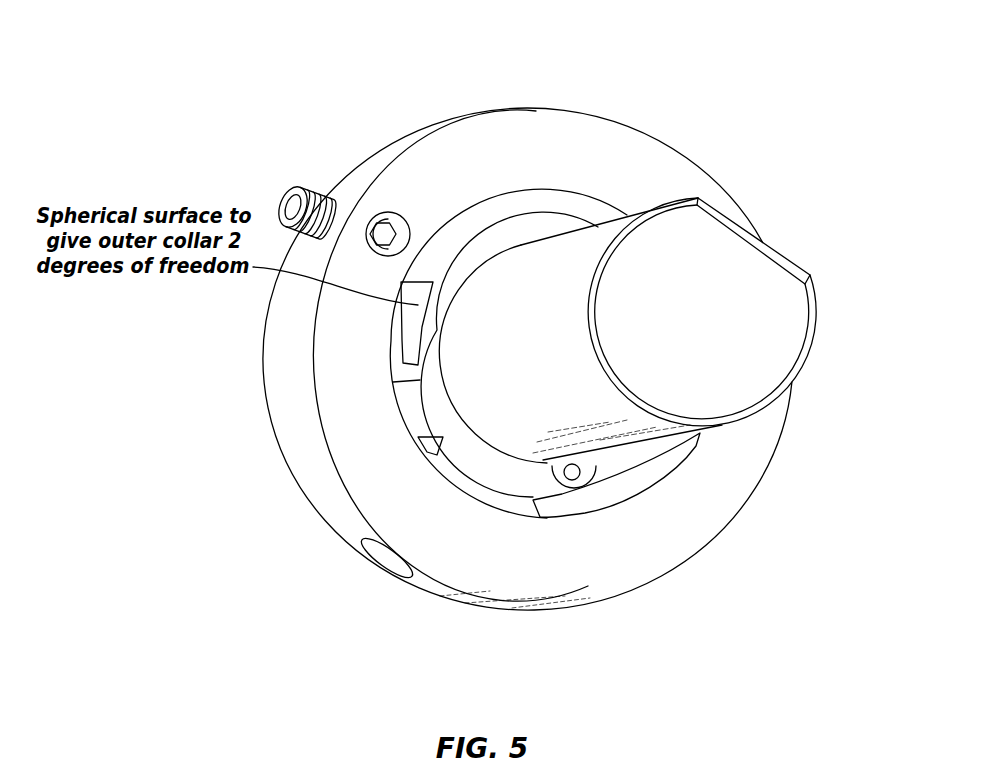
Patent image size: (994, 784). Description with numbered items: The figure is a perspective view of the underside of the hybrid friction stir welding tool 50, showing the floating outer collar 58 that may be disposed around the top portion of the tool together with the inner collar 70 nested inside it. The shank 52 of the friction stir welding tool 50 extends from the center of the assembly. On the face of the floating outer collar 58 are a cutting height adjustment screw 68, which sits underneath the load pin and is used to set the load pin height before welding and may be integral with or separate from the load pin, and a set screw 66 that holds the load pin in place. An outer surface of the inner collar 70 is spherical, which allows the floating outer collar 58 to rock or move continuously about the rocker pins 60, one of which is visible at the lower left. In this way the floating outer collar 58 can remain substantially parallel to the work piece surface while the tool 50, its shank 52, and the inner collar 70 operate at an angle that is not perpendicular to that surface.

The friction stir welding tool 50 is at (708, 135).
The shank 52 is at (786, 320).
The floating outer collar 58 is at (285, 373).
The rocker pins 60 is at (383, 555).
The set screw 66 is at (288, 196).
The cutting height adjustment screw 68 is at (373, 219).
The inner collar 70 is at (491, 242).